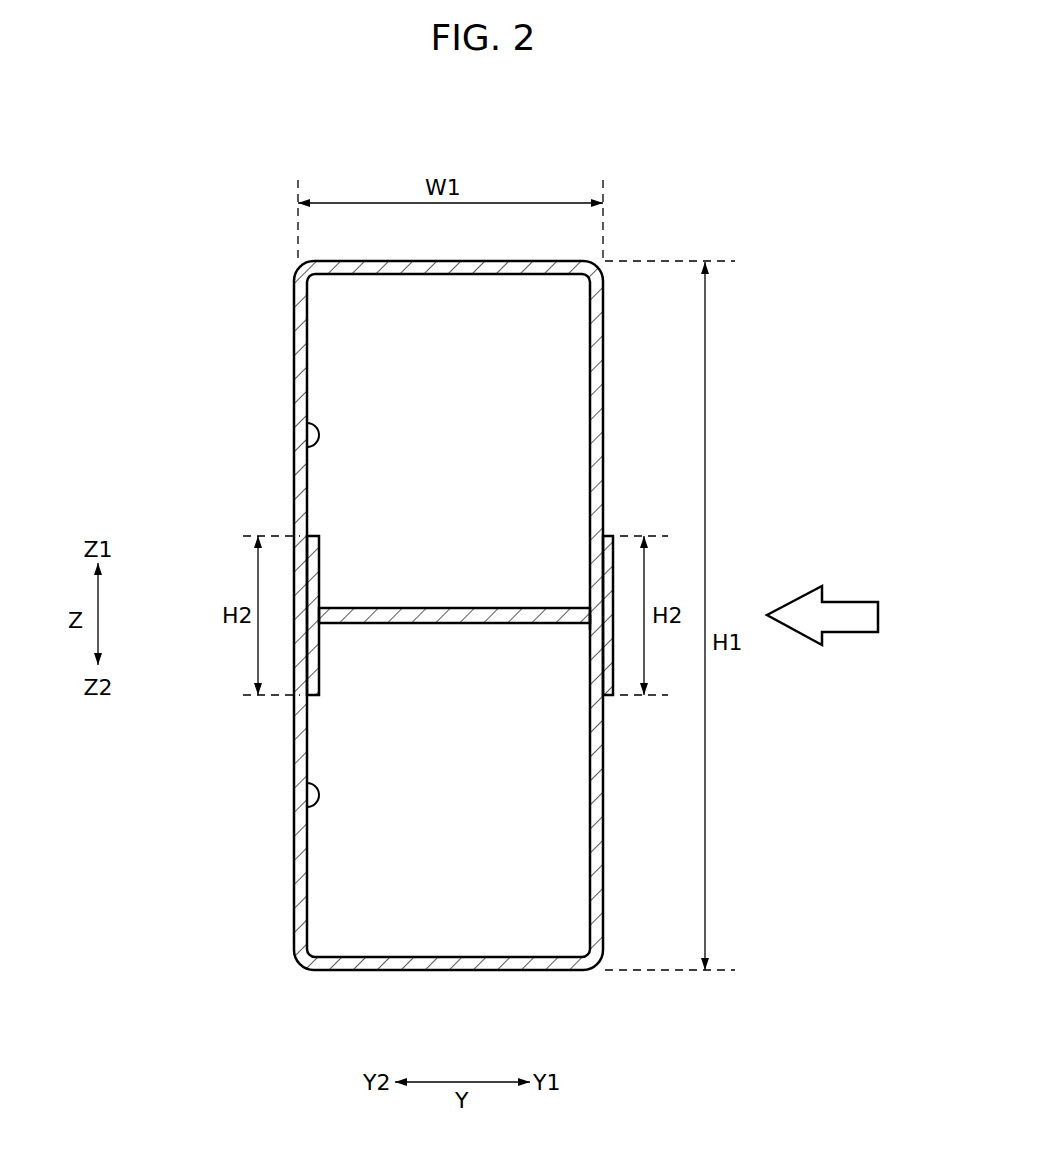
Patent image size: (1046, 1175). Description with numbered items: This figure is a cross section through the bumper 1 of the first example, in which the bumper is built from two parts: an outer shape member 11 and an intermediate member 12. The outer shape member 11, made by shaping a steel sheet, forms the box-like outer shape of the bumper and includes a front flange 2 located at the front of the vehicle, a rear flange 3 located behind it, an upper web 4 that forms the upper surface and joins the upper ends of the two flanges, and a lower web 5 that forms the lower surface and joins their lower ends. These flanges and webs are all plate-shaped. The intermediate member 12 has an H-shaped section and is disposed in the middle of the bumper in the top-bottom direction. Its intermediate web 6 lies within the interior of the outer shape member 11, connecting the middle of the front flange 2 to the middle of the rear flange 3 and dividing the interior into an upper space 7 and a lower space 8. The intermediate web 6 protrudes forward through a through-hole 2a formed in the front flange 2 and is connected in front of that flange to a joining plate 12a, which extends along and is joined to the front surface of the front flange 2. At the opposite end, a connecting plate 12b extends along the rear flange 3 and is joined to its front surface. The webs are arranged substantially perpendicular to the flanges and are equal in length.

The bumper 1 is at (462, 546).
The outer shape member 11 is at (295, 315).
The front flange 2 is at (600, 355).
The through-hole 2a is at (593, 622).
The rear flange 3 is at (300, 372).
The upper web 4 is at (451, 273).
The lower web 5 is at (458, 957).
The intermediate web 6 is at (445, 607).
The upper space 7 is at (318, 453).
The lower space 8 is at (318, 811).
The intermediate member 12 is at (486, 571).
The joining plate 12a is at (608, 537).
The connecting plate 12b is at (318, 540).